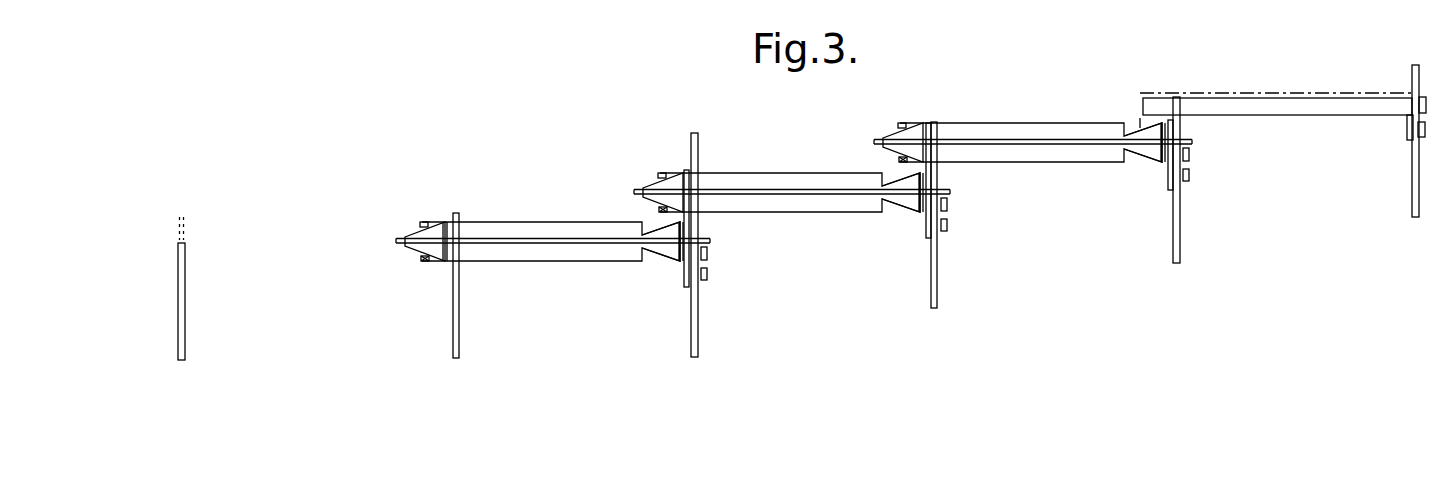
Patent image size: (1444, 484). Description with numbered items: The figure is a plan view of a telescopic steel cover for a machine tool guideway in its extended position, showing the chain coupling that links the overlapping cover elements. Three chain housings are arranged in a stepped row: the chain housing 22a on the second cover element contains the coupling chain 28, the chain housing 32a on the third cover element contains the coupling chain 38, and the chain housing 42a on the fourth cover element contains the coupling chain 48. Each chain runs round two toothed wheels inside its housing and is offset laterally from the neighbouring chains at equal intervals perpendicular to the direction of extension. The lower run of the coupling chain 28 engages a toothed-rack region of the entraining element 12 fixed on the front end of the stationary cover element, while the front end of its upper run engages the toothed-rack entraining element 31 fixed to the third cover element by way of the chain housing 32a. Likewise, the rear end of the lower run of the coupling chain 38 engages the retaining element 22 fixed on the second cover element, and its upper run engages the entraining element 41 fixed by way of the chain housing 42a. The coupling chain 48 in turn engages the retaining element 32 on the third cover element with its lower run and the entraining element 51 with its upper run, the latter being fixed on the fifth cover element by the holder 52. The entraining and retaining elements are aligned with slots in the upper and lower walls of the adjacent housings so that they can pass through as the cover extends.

The entraining element 12 is at (432, 251).
The chain housing 22a is at (482, 222).
The coupling chain 28 is at (553, 238).
The entraining element 31 is at (668, 250).
The retaining element 22 is at (669, 177).
The chain housing 32a is at (743, 173).
The coupling chain 38 is at (818, 173).
The entraining element 41 is at (910, 202).
The retaining element 32 is at (912, 123).
The chain housing 42a is at (993, 123).
The coupling chain 48 is at (1072, 123).
The entraining element 51 is at (1153, 155).
The holder 52 is at (1290, 105).